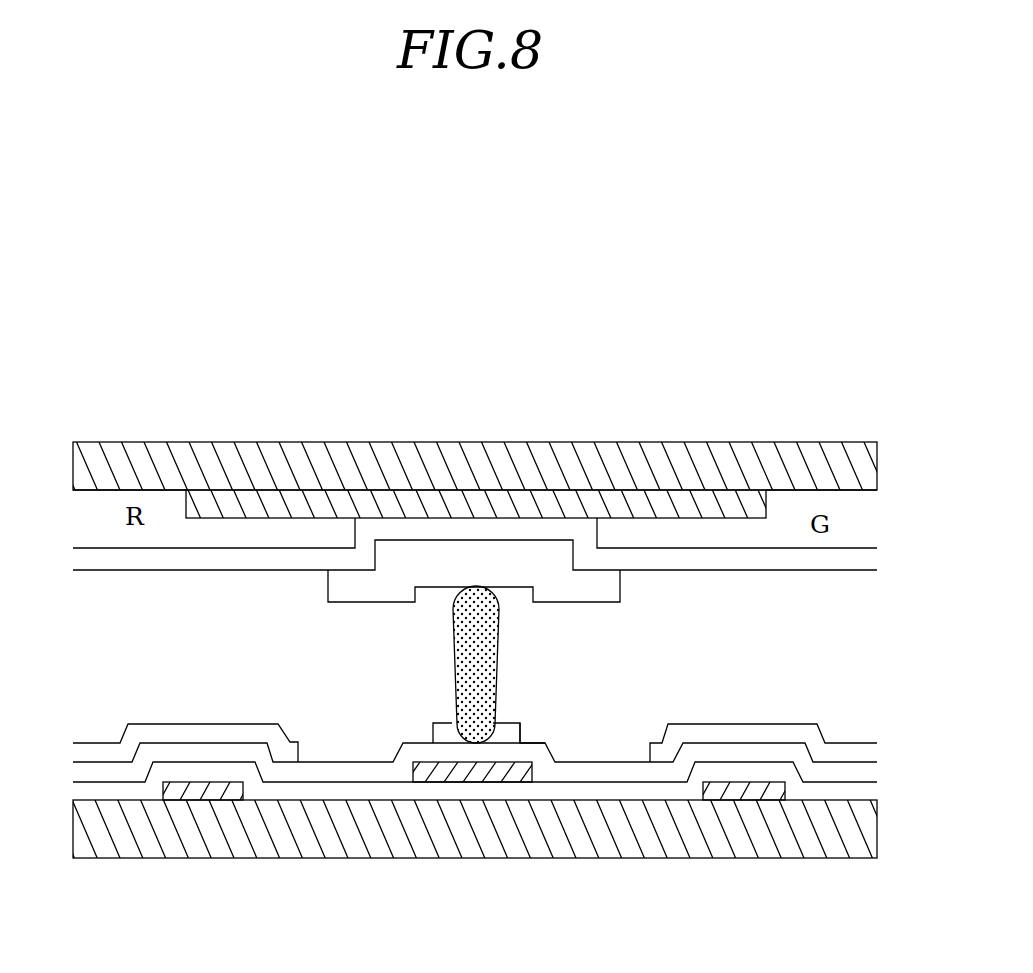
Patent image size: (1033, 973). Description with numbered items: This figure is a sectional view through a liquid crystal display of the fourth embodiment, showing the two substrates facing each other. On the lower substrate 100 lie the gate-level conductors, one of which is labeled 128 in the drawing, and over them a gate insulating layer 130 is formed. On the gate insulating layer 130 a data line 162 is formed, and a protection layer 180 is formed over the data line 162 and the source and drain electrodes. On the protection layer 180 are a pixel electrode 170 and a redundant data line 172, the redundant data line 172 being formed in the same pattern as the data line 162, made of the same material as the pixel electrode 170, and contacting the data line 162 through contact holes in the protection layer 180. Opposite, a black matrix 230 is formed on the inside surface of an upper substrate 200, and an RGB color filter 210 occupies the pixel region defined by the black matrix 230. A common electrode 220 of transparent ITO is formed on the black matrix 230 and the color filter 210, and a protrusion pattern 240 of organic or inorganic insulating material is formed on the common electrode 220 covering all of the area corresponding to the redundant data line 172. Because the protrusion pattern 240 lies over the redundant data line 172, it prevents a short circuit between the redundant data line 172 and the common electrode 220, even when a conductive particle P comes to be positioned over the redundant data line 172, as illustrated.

The lower substrate 100 is at (362, 840).
The gate electrode 128 is at (185, 797).
The gate insulating layer 130 is at (300, 795).
The data line 162 is at (433, 777).
The pixel electrode 170 is at (95, 752).
The redundant data line 172 is at (493, 757).
The protection layer 180 is at (617, 777).
The upper substrate 200 is at (402, 458).
The RGB color filter 210 is at (152, 502).
The common electrode 220 is at (478, 528).
The black matrix 230 is at (300, 502).
The protrusion pattern 240 is at (558, 548).
The conductive particle P is at (502, 639).